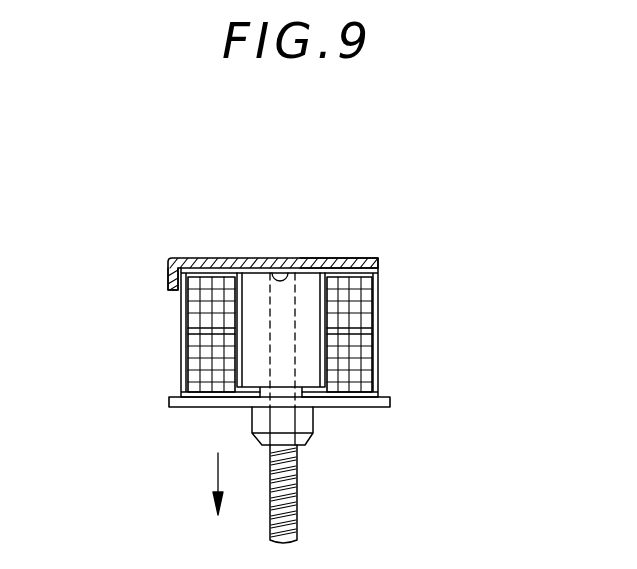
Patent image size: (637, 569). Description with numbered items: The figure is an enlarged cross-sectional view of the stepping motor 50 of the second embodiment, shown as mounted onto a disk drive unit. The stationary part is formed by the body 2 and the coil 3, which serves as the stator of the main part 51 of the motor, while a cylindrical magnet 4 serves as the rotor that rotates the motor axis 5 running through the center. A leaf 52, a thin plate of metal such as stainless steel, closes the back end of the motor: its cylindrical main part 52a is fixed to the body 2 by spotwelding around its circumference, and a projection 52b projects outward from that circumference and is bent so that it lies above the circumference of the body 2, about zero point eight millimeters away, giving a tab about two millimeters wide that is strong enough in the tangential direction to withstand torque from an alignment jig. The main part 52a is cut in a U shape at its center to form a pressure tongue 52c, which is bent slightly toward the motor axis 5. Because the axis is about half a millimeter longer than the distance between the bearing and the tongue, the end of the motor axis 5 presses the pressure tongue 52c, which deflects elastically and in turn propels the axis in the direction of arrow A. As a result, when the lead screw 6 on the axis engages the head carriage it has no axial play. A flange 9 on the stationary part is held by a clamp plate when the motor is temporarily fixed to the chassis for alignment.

The stepping motor 50 is at (128, 210).
The leaf 52 is at (245, 258).
The main part of the leaf 52a is at (202, 257).
The projection 52b is at (167, 283).
The pressure tongue 52c is at (272, 258).
The coil 3 is at (353, 259).
The main part of the motor 51 is at (176, 361).
The body 2 is at (183, 320).
The cylindrical magnet 4 is at (307, 372).
The motor axis 5 is at (282, 328).
The flange 9 is at (390, 405).
The lead screw 6 is at (290, 523).